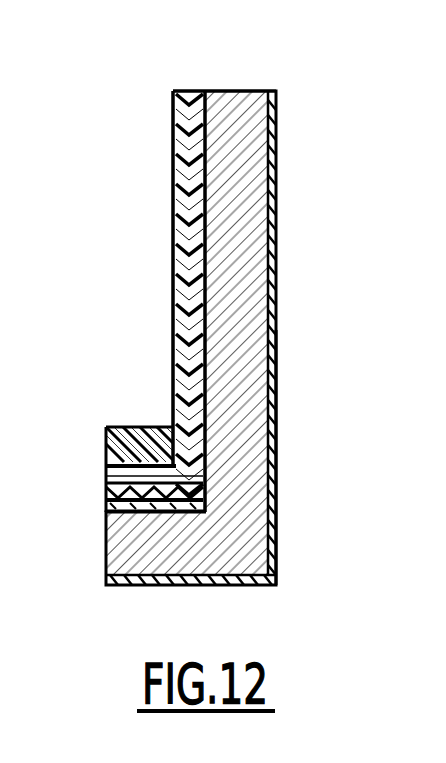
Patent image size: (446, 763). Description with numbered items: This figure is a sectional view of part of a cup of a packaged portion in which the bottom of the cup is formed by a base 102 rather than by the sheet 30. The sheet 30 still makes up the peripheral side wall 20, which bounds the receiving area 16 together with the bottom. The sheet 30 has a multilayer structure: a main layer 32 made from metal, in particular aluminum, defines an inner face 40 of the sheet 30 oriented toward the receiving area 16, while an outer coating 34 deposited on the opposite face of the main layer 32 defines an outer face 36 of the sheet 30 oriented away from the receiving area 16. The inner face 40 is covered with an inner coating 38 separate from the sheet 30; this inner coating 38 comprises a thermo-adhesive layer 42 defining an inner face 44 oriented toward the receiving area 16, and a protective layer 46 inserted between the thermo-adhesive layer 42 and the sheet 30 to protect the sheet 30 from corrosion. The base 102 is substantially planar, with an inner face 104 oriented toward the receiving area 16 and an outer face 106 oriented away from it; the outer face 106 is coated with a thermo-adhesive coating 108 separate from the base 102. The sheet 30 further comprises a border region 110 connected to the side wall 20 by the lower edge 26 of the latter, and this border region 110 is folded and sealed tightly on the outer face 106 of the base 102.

The sheet 30 is at (284, 84).
The main layer 32 is at (242, 99).
The outer coating 34 is at (278, 128).
The outer face 36 is at (278, 330).
The inner coating 38 is at (205, 86).
The side wall 20 is at (244, 248).
The lower edge 26 is at (278, 556).
The inner face of the coating 44 is at (172, 140).
The thermo-adhesive layer 42 is at (172, 172).
The inner face of the sheet 40 is at (172, 225).
The protective layer 46 is at (180, 273).
The receiving area 16 is at (155, 301).
The base 102 is at (112, 423).
The inner face of the base 104 is at (158, 428).
The outer face of the base 106 is at (108, 467).
The thermo-adhesive coating 108 is at (108, 478).
The border region 110 is at (104, 548).